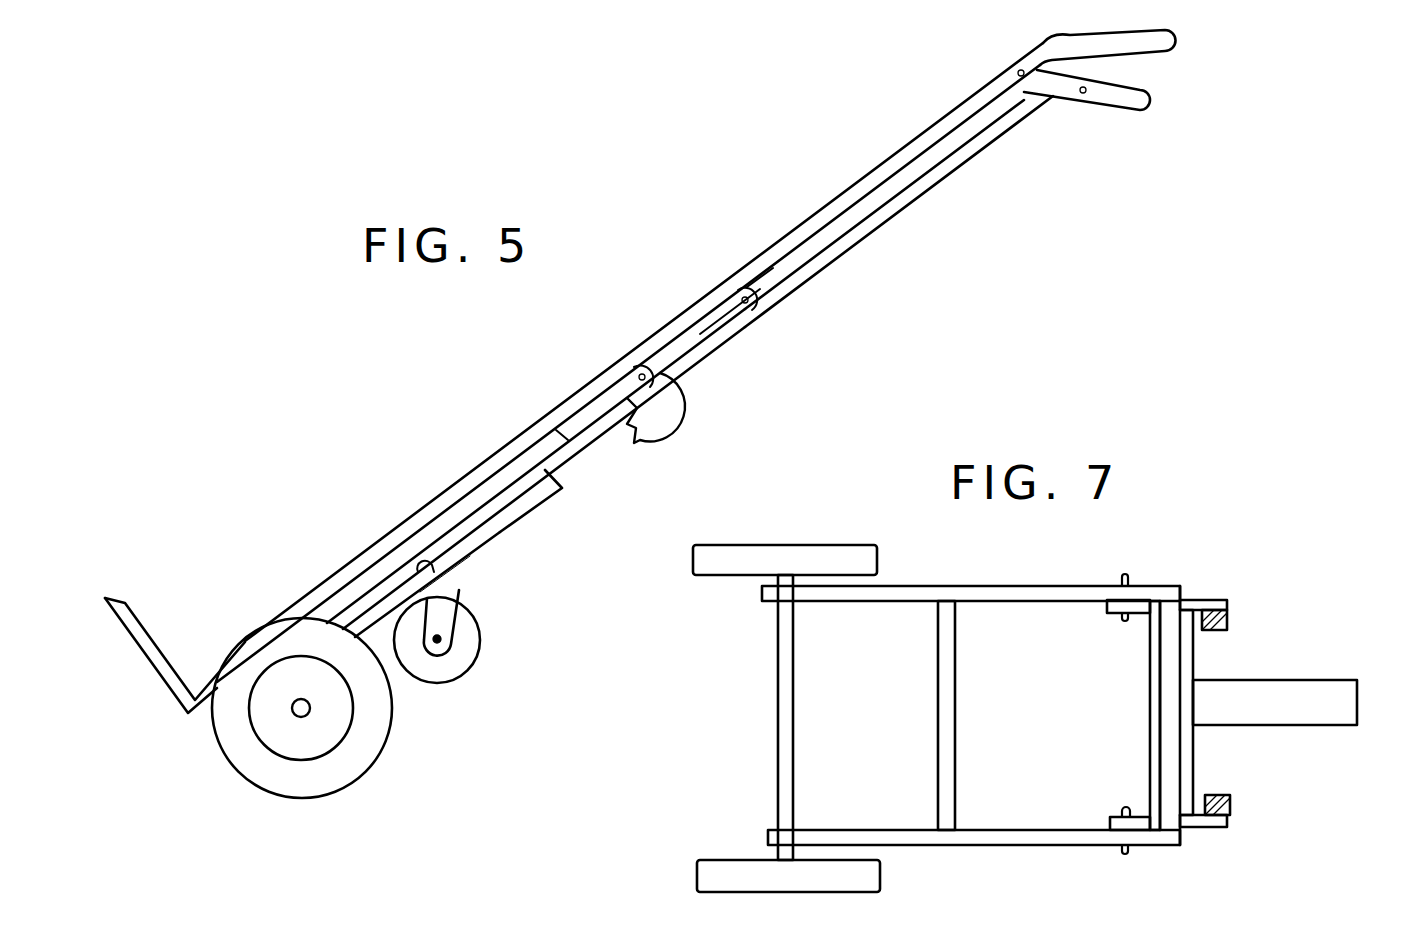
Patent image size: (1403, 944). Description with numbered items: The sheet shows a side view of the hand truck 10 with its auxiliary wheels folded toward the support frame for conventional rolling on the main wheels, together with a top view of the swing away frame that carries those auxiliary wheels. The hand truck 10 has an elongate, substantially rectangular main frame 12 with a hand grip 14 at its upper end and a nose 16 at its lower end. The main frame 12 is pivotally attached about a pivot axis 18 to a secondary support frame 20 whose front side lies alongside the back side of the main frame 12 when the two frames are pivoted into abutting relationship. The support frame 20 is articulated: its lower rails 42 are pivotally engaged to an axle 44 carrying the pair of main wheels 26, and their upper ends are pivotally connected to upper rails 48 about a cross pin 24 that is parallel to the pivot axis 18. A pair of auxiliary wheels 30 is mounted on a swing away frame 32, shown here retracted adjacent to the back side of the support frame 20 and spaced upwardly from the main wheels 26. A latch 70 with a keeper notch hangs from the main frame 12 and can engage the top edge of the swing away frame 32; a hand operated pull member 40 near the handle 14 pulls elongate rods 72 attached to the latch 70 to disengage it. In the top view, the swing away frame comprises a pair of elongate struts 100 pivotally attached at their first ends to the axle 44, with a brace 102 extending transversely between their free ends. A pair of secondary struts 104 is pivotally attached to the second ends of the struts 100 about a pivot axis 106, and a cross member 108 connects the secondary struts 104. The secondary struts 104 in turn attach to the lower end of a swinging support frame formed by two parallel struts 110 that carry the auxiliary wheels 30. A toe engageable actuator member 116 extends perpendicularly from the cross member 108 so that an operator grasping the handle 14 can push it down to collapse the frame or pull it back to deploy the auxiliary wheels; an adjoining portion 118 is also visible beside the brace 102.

In FIG. 5, the hand truck 10 is at (630, 362).
In FIG. 5, the main frame 12 is at (863, 192).
In FIG. 5, the hand grip 14 is at (1163, 44).
In FIG. 5, the nose 16 is at (141, 626).
In FIG. 5, the pivot axis 18 is at (748, 290).
In FIG. 5, the support frame 20 is at (723, 338).
In FIG. 5, the cross pin 24 is at (630, 372).
In FIG. 5, the main wheels 26 is at (256, 764).
In FIG. 7, the main wheels 26 is at (836, 556).
In FIG. 5, the auxiliary wheels 30 is at (456, 660).
In FIG. 5, the swing away frame 32 is at (512, 553).
In FIG. 5, the pull member 40 is at (1135, 103).
In FIG. 5, the lower rails 42 is at (562, 437).
In FIG. 5, the axle 44 is at (312, 718).
In FIG. 7, the axle 44 is at (787, 727).
In FIG. 5, the upper rails 48 is at (690, 340).
In FIG. 5, the latch 70 is at (657, 409).
In FIG. 5, the elongate rods 72 is at (940, 176).
In FIG. 5, the struts 100 is at (407, 605).
In FIG. 7, the struts 100 is at (912, 593).
In FIG. 7, the brace 102 is at (1172, 664).
In FIG. 7, the secondary struts 104 is at (1210, 598).
In FIG. 7, the pivot axis 106 is at (1126, 576).
In FIG. 7, the cross member 108 is at (1153, 700).
In FIG. 5, the struts 110 is at (573, 453).
In FIG. 7, the struts 110 is at (1232, 618).
In FIG. 7, the actuator member 116 is at (1313, 700).
In FIG. 7, the flange 118 is at (1187, 742).